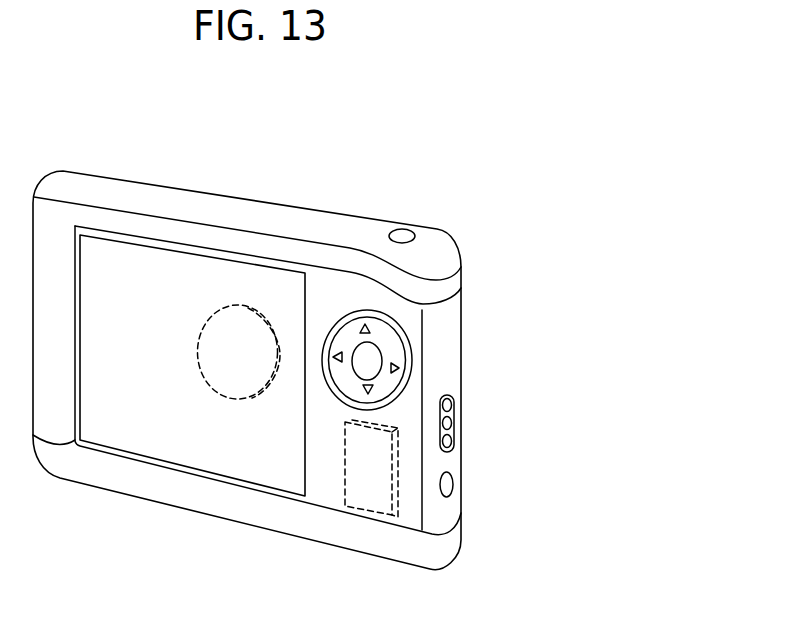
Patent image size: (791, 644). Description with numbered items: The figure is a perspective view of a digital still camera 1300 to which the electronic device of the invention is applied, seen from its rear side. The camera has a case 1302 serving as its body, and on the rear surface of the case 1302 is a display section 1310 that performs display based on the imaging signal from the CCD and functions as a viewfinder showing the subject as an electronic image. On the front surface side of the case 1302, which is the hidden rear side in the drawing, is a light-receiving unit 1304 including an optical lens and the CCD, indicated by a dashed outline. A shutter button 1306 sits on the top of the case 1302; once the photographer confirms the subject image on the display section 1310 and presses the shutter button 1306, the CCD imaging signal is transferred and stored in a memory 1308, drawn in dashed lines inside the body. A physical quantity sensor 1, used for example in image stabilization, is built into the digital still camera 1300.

The digital still camera 1300 is at (400, 151).
The case 1302 is at (57, 222).
The light-receiving unit 1304 is at (236, 305).
The shutter button 1306 is at (403, 231).
The memory 1308 is at (358, 508).
The display section 1310 is at (138, 423).
The physical quantity sensor 1 is at (328, 483).